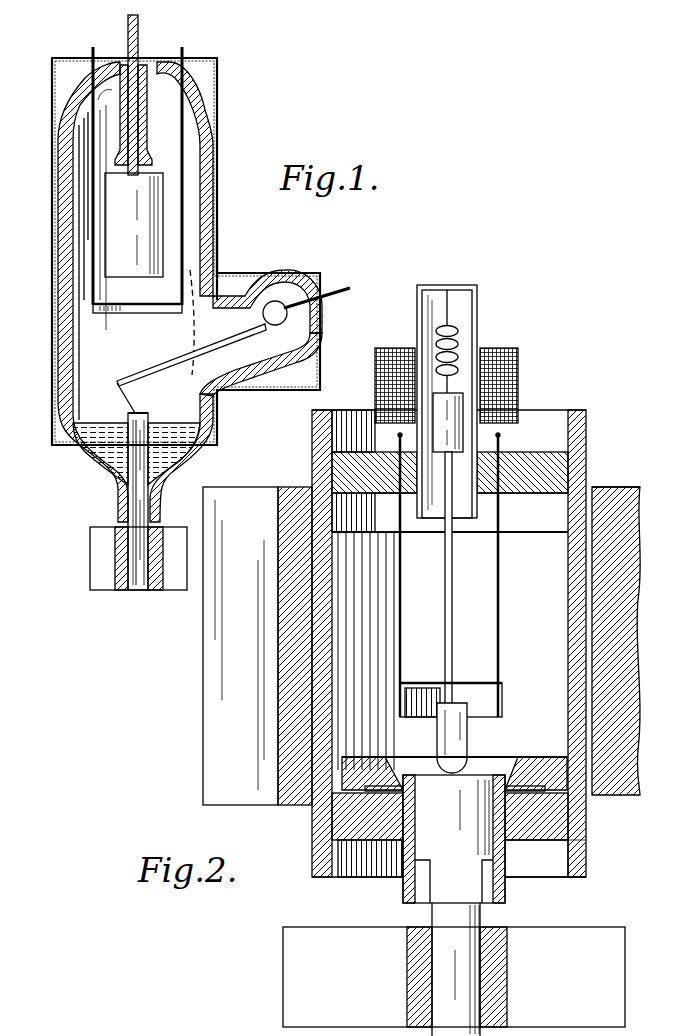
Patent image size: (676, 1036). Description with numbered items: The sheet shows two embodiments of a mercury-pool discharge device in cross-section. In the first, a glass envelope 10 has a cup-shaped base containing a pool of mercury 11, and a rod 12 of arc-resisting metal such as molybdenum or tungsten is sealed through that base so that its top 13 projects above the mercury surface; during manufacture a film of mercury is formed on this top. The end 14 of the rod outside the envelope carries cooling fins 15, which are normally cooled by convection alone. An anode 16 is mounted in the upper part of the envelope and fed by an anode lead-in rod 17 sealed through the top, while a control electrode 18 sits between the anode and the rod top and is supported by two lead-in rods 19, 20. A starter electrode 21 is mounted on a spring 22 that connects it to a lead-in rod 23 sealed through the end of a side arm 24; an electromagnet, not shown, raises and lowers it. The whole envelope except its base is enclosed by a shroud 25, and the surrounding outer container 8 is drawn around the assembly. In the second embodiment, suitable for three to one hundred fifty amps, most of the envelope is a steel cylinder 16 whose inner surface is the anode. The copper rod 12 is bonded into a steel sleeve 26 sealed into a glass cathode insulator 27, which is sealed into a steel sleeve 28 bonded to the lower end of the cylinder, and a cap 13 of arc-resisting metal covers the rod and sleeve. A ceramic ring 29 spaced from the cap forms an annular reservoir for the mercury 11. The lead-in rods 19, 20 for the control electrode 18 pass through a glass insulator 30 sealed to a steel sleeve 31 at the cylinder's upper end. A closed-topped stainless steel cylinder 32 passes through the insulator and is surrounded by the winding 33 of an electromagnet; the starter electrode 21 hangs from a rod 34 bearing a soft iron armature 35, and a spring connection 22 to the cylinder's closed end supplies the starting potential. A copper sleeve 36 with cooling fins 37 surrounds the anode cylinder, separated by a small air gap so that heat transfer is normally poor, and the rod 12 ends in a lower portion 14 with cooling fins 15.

In FIG. 1, the outer container 8 is at (186, 251).
In FIG. 1, the envelope 10 is at (80, 258).
In FIG. 2, the envelope 10 is at (366, 651).
In FIG. 1, the pool of mercury 11 is at (105, 455).
In FIG. 2, the pool of mercury 11 is at (522, 776).
In FIG. 1, the rod 12 is at (143, 500).
In FIG. 2, the rod 12 is at (437, 910).
In FIG. 1, the top of the rod 13 is at (137, 413).
In FIG. 2, the top of the rod 13 is at (412, 778).
In FIG. 1, the end of the rod 14 is at (139, 582).
In FIG. 2, the end of the rod 14 is at (443, 990).
In FIG. 1, the cooling fins 15 is at (177, 582).
In FIG. 2, the cooling fins 15 is at (454, 977).
In FIG. 1, the anode 16 is at (153, 233).
In FIG. 2, the anode 16 is at (587, 436).
In FIG. 1, the anode lead-in rod 17 is at (139, 31).
In FIG. 1, the control electrode 18 is at (129, 316).
In FIG. 2, the control electrode 18 is at (503, 700).
In FIG. 1, the lead-in rod 19 is at (183, 162).
In FIG. 2, the lead-in rod 19 is at (500, 597).
In FIG. 1, the lead-in rod 20 is at (92, 182).
In FIG. 2, the lead-in rod 20 is at (402, 597).
In FIG. 1, the starter electrode 21 is at (162, 362).
In FIG. 2, the starter electrode 21 is at (455, 747).
In FIG. 1, the spring 22 is at (281, 298).
In FIG. 2, the spring 22 is at (455, 343).
In FIG. 1, the lead-in rod 23 is at (348, 294).
In FIG. 1, the side arm 24 is at (294, 358).
In FIG. 1, the shroud 25 is at (218, 238).
In FIG. 2, the steel sleeve 26 is at (506, 857).
In FIG. 2, the glass cathode insulator 27 is at (584, 832).
In FIG. 2, the steel sleeve 28 is at (578, 876).
In FIG. 2, the ceramic ring 29 is at (350, 798).
In FIG. 2, the glass insulator 30 is at (540, 478).
In FIG. 2, the steel sleeve 31 is at (566, 420).
In FIG. 2, the stainless steel cylinder 32 is at (478, 306).
In FIG. 2, the winding 33 is at (375, 363).
In FIG. 2, the rod 34 is at (453, 643).
In FIG. 2, the soft iron armature 35 is at (456, 436).
In FIG. 2, the sleeve 36 is at (605, 493).
In FIG. 2, the cooling fins 37 is at (205, 670).